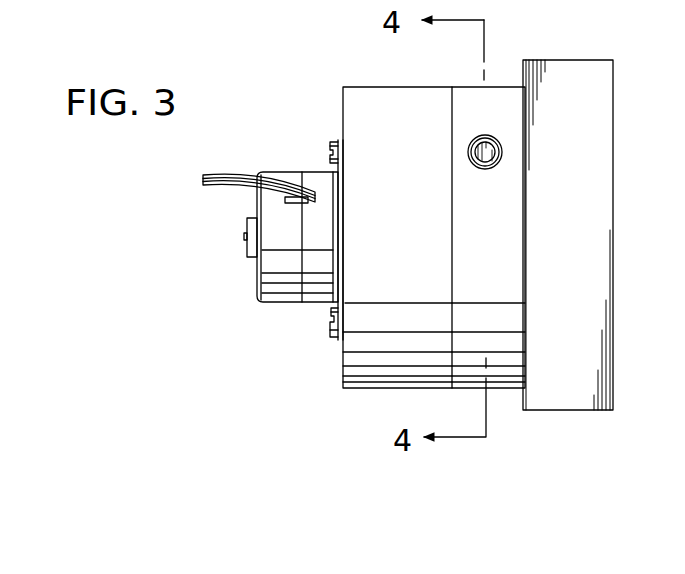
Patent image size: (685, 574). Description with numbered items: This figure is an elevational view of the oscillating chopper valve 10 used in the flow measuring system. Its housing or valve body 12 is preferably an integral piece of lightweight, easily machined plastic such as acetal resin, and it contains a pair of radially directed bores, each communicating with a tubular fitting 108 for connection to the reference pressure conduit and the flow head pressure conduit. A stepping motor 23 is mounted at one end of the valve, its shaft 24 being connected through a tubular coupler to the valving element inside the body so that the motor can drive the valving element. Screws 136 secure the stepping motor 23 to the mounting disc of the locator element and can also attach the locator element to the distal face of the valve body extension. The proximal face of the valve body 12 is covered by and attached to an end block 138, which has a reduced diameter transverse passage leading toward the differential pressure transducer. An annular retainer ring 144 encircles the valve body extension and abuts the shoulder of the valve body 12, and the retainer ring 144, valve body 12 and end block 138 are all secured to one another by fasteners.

The oscillating chopper valve 10 is at (310, 88).
The housing or valve body 12 is at (495, 86).
The stepping motor 23 is at (285, 303).
The shaft 24 is at (246, 236).
The tubular fitting 108 is at (500, 160).
The screws 136 is at (330, 149).
The end block 138 is at (614, 87).
The annular retainer ring 144 is at (416, 88).